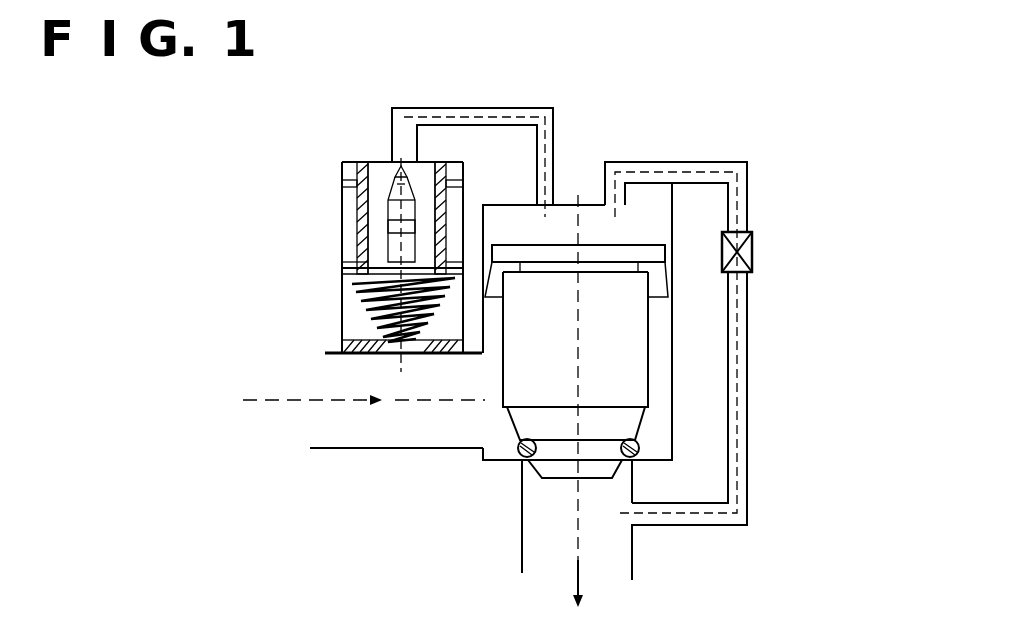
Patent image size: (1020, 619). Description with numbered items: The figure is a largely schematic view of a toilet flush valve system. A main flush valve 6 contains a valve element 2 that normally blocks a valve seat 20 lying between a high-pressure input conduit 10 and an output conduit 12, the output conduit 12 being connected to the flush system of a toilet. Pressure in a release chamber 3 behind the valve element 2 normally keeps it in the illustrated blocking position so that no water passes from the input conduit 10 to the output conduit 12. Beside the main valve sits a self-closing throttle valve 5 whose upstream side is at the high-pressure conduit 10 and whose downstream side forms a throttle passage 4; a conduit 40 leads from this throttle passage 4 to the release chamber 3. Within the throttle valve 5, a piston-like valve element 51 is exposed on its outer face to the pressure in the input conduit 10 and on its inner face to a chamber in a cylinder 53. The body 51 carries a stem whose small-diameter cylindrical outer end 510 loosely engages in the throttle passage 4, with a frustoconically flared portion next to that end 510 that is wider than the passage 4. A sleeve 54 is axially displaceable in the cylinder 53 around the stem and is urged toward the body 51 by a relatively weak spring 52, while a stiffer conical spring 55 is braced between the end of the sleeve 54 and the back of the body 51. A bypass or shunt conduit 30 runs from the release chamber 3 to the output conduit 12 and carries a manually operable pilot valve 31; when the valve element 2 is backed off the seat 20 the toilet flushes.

The valve element 2 is at (613, 400).
The release chamber 3 is at (598, 218).
The throttle passage 4 is at (399, 168).
The self-closing throttle valve 5 is at (326, 208).
The main flush valve 6 is at (702, 397).
The high-pressure input conduit 10 is at (368, 449).
The output conduit 12 is at (637, 553).
The valve seat 20 is at (517, 458).
The bypass conduit 30 is at (725, 346).
The pilot valve 31 is at (753, 262).
The conduit 40 is at (515, 108).
The piston-like valve element 51 is at (346, 326).
The weak spring 52 is at (345, 241).
The cylinder 53 is at (342, 170).
The sleeve 54 is at (357, 222).
The conical spring 55 is at (348, 298).
The cylindrical outer end 510 is at (396, 186).